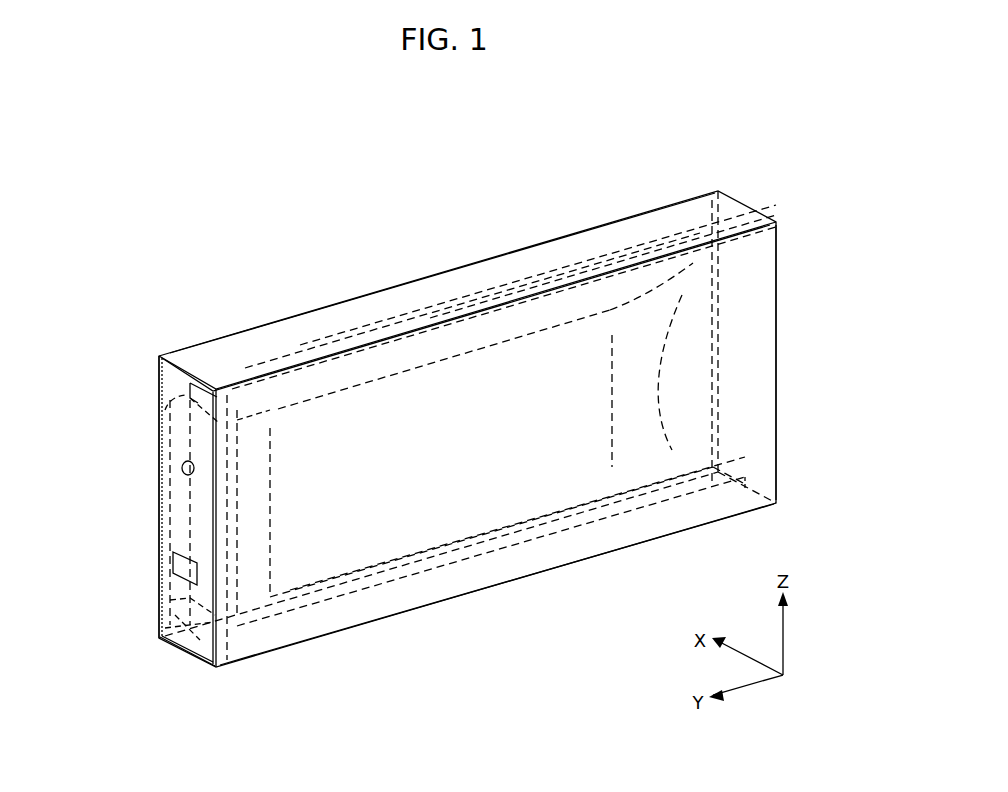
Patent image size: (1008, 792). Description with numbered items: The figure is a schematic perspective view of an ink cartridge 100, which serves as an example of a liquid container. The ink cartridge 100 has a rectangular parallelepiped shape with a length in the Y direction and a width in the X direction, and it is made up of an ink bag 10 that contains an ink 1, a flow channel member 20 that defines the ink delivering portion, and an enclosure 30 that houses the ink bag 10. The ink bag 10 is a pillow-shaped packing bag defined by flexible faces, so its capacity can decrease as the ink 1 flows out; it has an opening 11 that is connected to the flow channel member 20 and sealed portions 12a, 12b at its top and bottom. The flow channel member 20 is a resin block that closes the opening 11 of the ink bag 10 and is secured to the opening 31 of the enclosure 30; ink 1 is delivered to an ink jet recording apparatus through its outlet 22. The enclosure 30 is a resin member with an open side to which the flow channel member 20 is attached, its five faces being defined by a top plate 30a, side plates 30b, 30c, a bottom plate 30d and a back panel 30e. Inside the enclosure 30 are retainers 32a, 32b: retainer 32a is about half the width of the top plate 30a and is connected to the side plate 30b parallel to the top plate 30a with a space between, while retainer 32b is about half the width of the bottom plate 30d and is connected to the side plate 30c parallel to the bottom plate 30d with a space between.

The ink cartridge 100 is at (194, 240).
The enclosure 30 is at (815, 240).
The top plate 30a is at (555, 258).
The side plate 30b is at (643, 448).
The side plate 30c is at (623, 218).
The bottom plate 30d is at (192, 658).
The back panel 30e is at (778, 465).
The ink bag 10 is at (367, 520).
The ink 1 is at (445, 508).
The opening 11 is at (155, 533).
The sealed portion 12a is at (368, 332).
The sealed portion 12b is at (157, 618).
The flow channel member 20 is at (167, 452).
The outlet 22 is at (182, 467).
The opening 31 is at (160, 413).
The retainer 32a is at (490, 300).
The retainer 32b is at (552, 528).